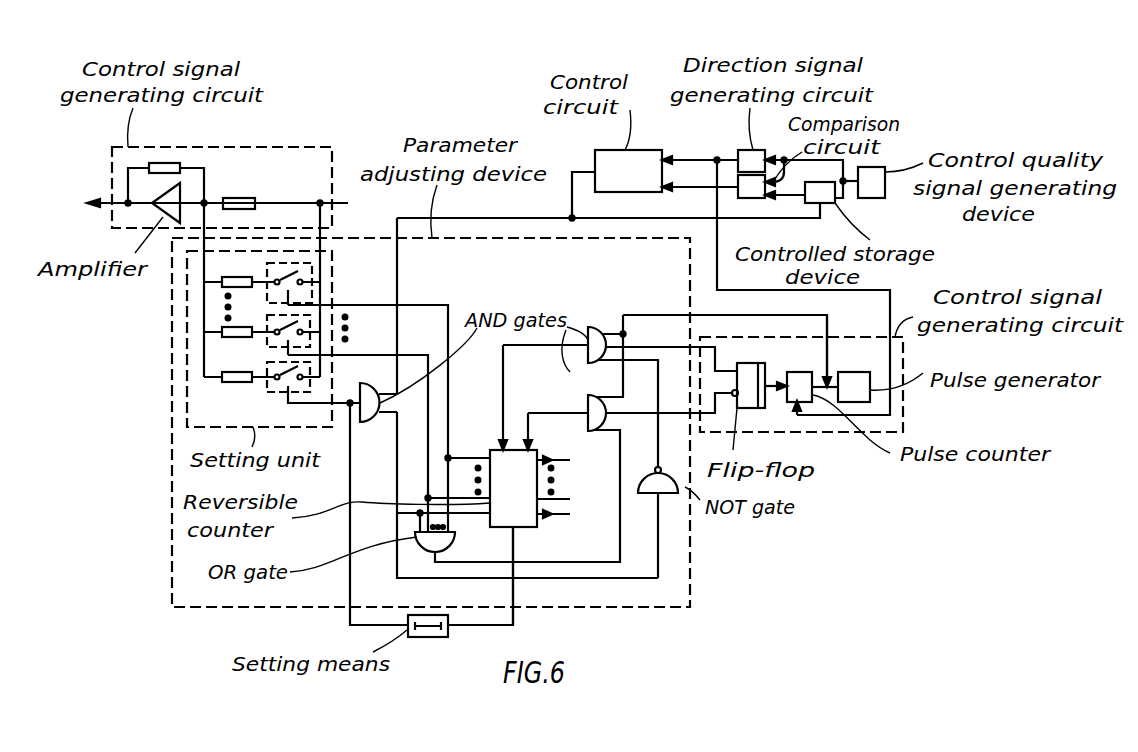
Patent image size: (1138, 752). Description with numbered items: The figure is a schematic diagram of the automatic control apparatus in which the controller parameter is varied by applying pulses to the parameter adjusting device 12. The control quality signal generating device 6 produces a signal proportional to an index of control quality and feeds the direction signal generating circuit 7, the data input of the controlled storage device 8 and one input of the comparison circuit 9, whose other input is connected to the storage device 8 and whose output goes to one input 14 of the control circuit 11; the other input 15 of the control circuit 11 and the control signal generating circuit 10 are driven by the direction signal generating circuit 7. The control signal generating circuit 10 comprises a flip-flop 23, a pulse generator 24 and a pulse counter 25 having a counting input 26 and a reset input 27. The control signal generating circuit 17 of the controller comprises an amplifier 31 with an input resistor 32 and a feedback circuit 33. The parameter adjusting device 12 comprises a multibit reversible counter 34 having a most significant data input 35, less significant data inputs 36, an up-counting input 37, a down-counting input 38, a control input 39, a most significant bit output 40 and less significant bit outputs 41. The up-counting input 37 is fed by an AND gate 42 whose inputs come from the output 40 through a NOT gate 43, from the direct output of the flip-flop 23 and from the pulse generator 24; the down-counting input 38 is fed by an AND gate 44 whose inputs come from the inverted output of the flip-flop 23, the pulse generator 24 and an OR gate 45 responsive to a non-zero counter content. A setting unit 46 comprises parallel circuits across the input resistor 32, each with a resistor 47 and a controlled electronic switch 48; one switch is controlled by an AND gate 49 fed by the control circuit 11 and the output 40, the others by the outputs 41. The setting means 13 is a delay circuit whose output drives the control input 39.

The control quality signal generating device 6 is at (871, 182).
The direction signal generating circuit 7 is at (753, 150).
The controlled storage device 8 is at (827, 205).
The comparison circuit 9 is at (745, 198).
The control signal generating circuit 10 is at (774, 331).
The control circuit 11 is at (628, 171).
The parameter adjusting device 12 is at (496, 232).
The setting means 13 is at (432, 638).
The input of the control circuit 14 is at (686, 187).
The input of the control circuit 15 is at (685, 158).
The control signal generating circuit 17 is at (302, 145).
The flip-flop 23 is at (747, 366).
The pulse generator 24 is at (841, 387).
The pulse counter 25 is at (799, 387).
The counting input 26 is at (825, 380).
The reset input 27 is at (796, 405).
The amplifier 31 is at (168, 205).
The input resistor 32 is at (240, 203).
The feedback circuit 33 is at (163, 165).
The multibit reversible counter 34 is at (515, 488).
The data input 35 is at (562, 515).
The data inputs 36 is at (563, 460).
The up-counting input 37 is at (503, 424).
The down-counting input 38 is at (530, 428).
The control input 39 is at (516, 548).
The most significant bit position output 40 is at (480, 516).
The less significant bit position outputs 41 is at (465, 458).
The AND gate 42 is at (598, 338).
The NOT gate 43 is at (666, 478).
The AND gate 44 is at (590, 401).
The OR gate 45 is at (455, 539).
The setting unit 46 is at (337, 253).
The resistor 47 is at (235, 279).
The controlled electronic switch 48 is at (278, 319).
The AND gate 49 is at (366, 393).